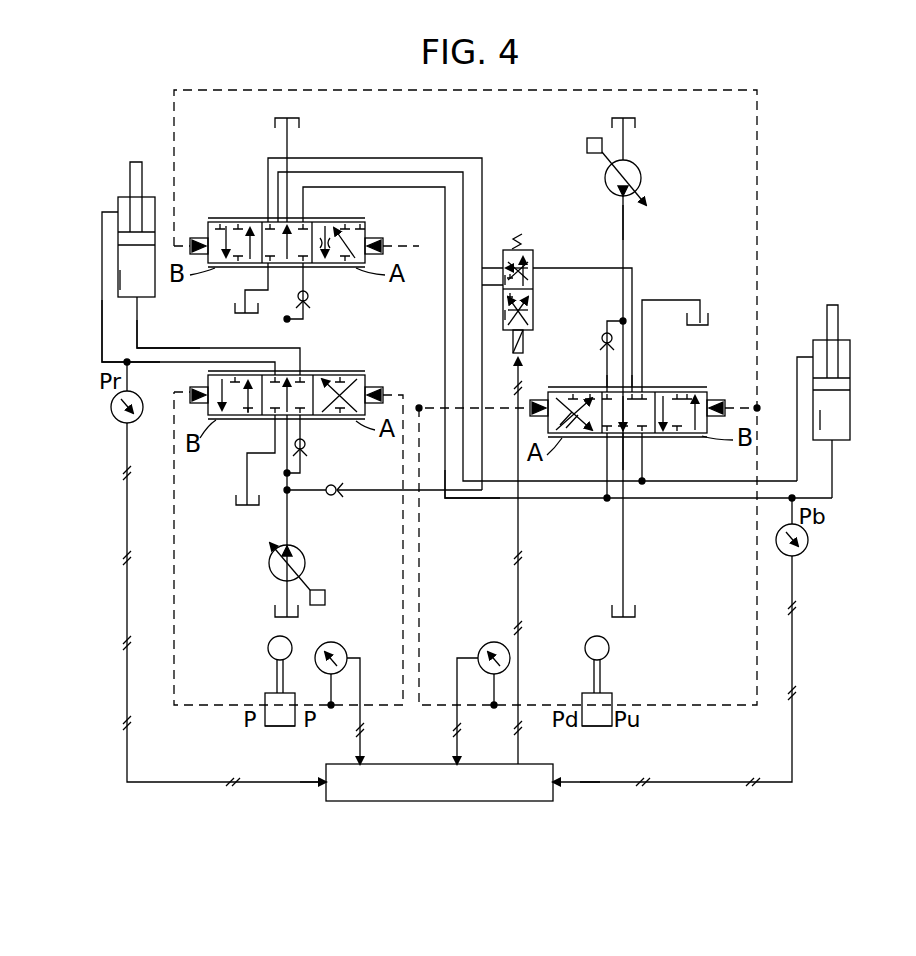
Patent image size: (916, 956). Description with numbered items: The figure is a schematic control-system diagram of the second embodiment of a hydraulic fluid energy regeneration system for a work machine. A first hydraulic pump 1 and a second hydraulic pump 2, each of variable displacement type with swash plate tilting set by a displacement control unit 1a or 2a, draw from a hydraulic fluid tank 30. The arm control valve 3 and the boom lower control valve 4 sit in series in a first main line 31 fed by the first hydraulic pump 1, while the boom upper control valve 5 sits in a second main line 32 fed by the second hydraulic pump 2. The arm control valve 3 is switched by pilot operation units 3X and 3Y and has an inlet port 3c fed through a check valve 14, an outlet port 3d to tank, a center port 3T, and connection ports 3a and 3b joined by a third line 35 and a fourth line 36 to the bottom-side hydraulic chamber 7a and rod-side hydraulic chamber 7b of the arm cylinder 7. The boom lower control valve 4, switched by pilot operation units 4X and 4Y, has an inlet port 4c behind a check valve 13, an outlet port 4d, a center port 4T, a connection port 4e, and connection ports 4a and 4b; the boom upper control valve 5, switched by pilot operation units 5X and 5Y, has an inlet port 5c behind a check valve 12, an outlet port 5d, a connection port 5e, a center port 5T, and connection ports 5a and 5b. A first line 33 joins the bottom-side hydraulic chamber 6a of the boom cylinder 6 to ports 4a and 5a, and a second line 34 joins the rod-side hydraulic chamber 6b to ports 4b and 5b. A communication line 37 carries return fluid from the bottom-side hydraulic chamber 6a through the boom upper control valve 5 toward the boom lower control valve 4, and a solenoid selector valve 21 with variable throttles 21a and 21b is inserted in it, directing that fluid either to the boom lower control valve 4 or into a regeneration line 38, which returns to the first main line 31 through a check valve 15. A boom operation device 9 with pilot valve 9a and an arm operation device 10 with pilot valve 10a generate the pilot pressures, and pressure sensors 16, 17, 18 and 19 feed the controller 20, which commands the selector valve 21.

The first hydraulic pump 1 is at (269, 566).
The displacement control unit 1a is at (317, 590).
The second hydraulic pump 2 is at (640, 166).
The displacement control unit 2a is at (592, 138).
The arm control valve 3 is at (340, 370).
The connection port 3a is at (300, 370).
The connection port 3b is at (276, 370).
The inlet port 3c is at (303, 425).
The outlet port 3d is at (272, 428).
The center port 3T is at (286, 428).
The pilot operation unit 3X is at (190, 390).
The pilot operation unit 3Y is at (384, 389).
The boom lower control valve 4 is at (226, 216).
The connection port 4a is at (305, 218).
The connection port 4b is at (268, 216).
The inlet port 4c is at (305, 280).
The outlet port 4d is at (268, 280).
The connection port 4e is at (252, 218).
The center port 4T is at (289, 216).
The pilot operation unit 4X is at (192, 240).
The pilot operation unit 4Y is at (384, 240).
The boom upper control valve 5 is at (690, 385).
The connection port 5a is at (606, 440).
The connection port 5b is at (645, 440).
The inlet port 5c is at (606, 385).
The outlet port 5d is at (644, 385).
The connection port 5e is at (633, 385).
The center port 5T is at (624, 440).
The pilot operation unit 5X is at (716, 400).
The pilot operation unit 5Y is at (534, 400).
The boom cylinder 6 is at (850, 396).
The bottom-side hydraulic chamber 6a is at (850, 418).
The rod-side hydraulic chamber 6b is at (850, 352).
The arm cylinder 7 is at (118, 256).
The bottom-side hydraulic chamber 7a is at (124, 283).
The rod-side hydraulic chamber 7b is at (118, 205).
The boom operation device 9 is at (587, 640).
The pilot valve 9a is at (597, 727).
The arm operation device 10 is at (268, 648).
The pilot valve 10a is at (280, 727).
The check valve 12 is at (600, 340).
The check valve 13 is at (306, 303).
The check valve 14 is at (305, 452).
The check valve 15 is at (337, 496).
The pressure sensor 16 is at (810, 540).
The pressure sensor 17 is at (110, 408).
The pressure sensor 18 is at (486, 643).
The pressure sensor 19 is at (340, 643).
The controller 20 is at (470, 764).
The solenoid selector valve 21 is at (506, 250).
The variable throttle 21a is at (535, 279).
The variable throttle 21b is at (535, 323).
The hydraulic fluid tank 30 is at (300, 118).
The first main line 31 is at (286, 526).
The second main line 32 is at (626, 218).
The first line 33 is at (833, 492).
The second line 34 is at (797, 350).
The third line 35 is at (148, 347).
The fourth line 36 is at (102, 335).
The communication line 37 is at (564, 267).
The regeneration line 38 is at (456, 499).